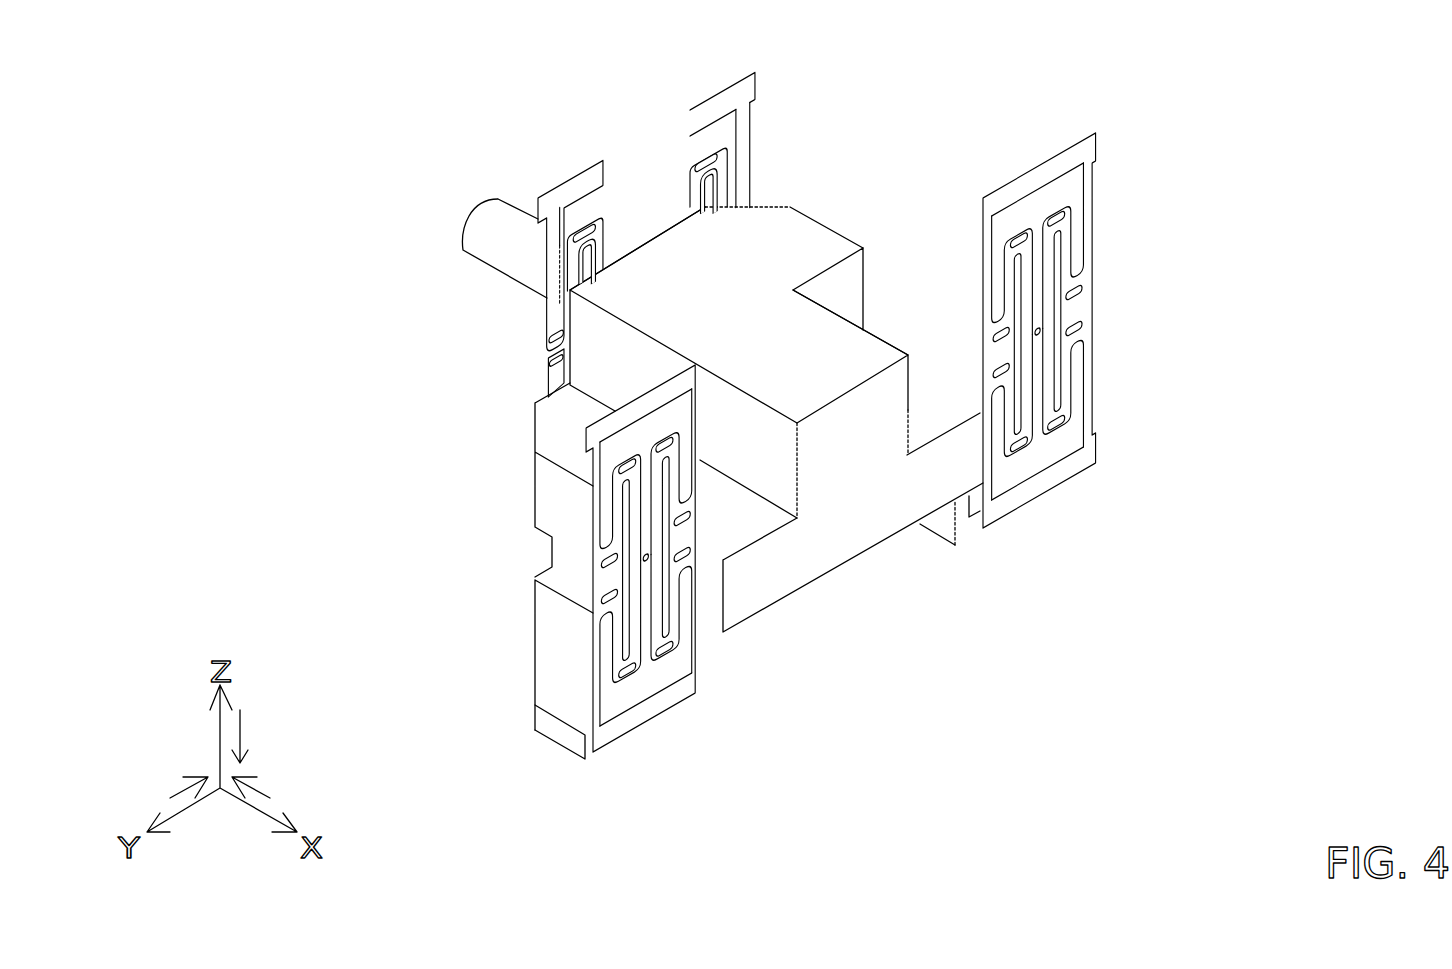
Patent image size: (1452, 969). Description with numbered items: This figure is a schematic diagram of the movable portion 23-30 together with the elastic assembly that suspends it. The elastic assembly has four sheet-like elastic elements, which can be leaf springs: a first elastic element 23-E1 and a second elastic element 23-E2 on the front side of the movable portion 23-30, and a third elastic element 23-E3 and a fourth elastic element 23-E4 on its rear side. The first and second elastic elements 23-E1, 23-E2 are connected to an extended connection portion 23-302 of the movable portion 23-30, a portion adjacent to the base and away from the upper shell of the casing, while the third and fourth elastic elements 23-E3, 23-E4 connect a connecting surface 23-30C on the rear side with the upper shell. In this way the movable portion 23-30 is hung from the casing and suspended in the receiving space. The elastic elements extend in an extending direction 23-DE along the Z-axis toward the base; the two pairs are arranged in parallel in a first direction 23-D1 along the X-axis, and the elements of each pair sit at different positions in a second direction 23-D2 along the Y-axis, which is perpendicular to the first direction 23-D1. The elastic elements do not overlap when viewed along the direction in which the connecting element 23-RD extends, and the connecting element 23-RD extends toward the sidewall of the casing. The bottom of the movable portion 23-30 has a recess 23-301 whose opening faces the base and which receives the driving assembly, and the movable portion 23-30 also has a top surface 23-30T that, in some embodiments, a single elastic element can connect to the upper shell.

The movable portion 23-30 is at (855, 515).
The top surface of the movable portion 23-30T is at (778, 250).
The connecting surface 23-30C is at (658, 223).
The recess 23-301 is at (783, 607).
The extended connection portion 23-302 is at (592, 752).
The connecting element 23-RD is at (493, 233).
The first elastic element 23-E1 is at (657, 708).
The second elastic element 23-E2 is at (1043, 492).
The third elastic element 23-E3 is at (572, 193).
The fourth elastic element 23-E4 is at (720, 107).
The extending direction 23-DE is at (281, 732).
The first direction 23-D1 is at (293, 793).
The second direction 23-D2 is at (145, 793).